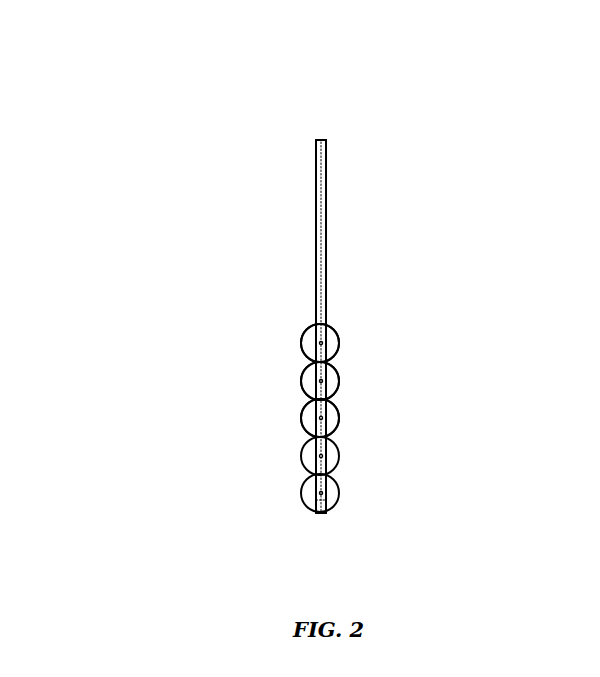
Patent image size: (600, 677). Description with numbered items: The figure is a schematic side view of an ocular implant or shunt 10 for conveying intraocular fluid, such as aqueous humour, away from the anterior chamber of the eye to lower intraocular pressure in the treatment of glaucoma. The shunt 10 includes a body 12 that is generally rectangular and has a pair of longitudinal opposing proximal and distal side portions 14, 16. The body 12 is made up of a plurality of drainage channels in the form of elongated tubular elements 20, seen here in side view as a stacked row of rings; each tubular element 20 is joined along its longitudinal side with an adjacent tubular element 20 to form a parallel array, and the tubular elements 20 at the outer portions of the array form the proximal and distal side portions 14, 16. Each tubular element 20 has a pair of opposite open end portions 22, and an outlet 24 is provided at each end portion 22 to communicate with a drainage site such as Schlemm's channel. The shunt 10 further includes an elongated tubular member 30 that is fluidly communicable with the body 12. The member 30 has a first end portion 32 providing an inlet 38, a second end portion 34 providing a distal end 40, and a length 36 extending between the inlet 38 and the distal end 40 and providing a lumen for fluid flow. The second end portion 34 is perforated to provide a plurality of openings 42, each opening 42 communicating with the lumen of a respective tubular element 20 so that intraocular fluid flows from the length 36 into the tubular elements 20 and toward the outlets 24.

The ocular implant or shunt 10 is at (177, 267).
The body 12 is at (371, 377).
The proximal side portion 14 is at (272, 302).
The distal side portion 16 is at (369, 562).
The tubular element 20 is at (257, 332).
The open end portion 22 is at (370, 417).
The outlet 24 is at (371, 464).
The elongated tubular member 30 is at (382, 307).
The first end portion 32 is at (373, 111).
The second end portion 34 is at (277, 390).
The length 36 is at (265, 238).
The inlet 38 is at (320, 132).
The distal end 40 is at (281, 565).
The opening 42 is at (368, 303).